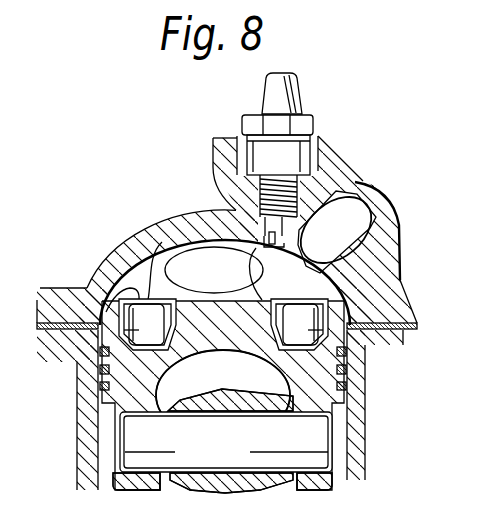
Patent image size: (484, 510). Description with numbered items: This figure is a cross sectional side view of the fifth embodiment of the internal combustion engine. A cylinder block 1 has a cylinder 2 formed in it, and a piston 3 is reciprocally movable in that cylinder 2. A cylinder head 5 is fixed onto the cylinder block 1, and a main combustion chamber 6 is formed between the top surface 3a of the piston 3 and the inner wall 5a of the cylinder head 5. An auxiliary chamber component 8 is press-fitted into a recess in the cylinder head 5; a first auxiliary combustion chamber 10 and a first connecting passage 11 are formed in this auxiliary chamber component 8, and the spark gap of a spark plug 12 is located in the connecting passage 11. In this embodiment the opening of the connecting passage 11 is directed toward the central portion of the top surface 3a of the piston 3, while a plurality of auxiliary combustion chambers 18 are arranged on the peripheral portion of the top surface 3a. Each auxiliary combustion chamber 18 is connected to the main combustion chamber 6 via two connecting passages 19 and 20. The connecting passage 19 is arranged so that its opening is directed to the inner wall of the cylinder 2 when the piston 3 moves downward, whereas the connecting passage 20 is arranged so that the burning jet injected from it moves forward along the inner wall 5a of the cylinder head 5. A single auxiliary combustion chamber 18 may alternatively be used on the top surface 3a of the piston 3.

The cylinder block 1 is at (366, 412).
The cylinder 2 is at (343, 440).
The piston 3 is at (348, 377).
The top surface of the piston 3a is at (146, 253).
The cylinder head 5 is at (404, 283).
The inner wall of the cylinder head 5a is at (187, 243).
The main combustion chamber 6 is at (292, 291).
The auxiliary chamber component 8 is at (359, 151).
The first auxiliary combustion chamber 10 is at (346, 242).
The first connecting passage 11 is at (231, 212).
The spark plug 12 is at (298, 98).
The auxiliary combustion chambers 18 is at (80, 354).
The connecting passage 19 is at (88, 286).
The connecting passage 20 is at (131, 291).